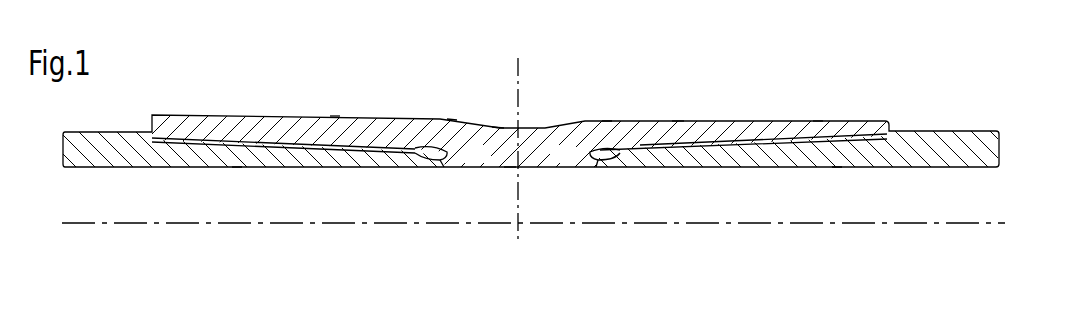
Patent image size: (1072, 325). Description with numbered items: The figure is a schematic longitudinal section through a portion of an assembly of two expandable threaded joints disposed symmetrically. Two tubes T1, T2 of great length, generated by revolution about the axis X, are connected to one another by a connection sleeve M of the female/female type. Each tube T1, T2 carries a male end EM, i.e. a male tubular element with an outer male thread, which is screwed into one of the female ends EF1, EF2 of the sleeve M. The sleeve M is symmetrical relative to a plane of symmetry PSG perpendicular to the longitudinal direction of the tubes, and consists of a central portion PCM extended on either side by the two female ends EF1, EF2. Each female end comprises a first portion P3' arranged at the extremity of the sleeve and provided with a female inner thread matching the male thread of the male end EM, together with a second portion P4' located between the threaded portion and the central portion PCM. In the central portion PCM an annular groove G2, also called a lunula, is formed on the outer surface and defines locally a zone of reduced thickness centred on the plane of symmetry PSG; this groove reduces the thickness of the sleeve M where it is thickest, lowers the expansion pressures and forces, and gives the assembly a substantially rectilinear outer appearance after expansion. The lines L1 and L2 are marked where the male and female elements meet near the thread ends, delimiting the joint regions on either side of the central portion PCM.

The tube T1 is at (68, 169).
The tube T2 is at (963, 169).
The axis X is at (524, 221).
The male end EM is at (837, 169).
The first portion of female end P3' is at (519, 102).
The second portion of female end P4' is at (539, 75).
The female end EF1 is at (335, 114).
The female end EF2 is at (818, 119).
The annular groove G2 is at (498, 127).
The plane of symmetry PSG is at (521, 68).
The connection sleeve M is at (678, 120).
The first bond line L1 is at (598, 156).
The second bond line L2 is at (599, 170).
The central portion of sleeve PCM is at (510, 169).